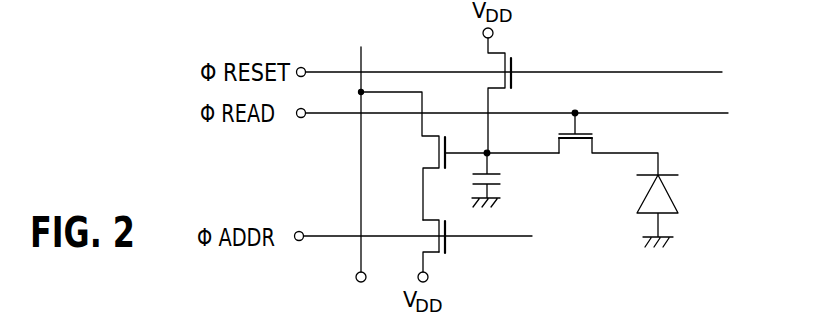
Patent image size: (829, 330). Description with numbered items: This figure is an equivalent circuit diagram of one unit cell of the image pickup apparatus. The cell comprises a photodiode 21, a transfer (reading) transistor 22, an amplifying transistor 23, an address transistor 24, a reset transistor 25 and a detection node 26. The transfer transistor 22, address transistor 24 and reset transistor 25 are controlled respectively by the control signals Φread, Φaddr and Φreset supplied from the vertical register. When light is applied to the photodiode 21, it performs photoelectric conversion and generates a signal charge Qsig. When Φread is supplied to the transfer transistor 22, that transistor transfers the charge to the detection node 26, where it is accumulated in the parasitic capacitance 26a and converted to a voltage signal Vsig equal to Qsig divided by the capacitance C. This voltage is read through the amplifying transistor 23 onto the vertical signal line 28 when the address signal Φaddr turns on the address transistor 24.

The photodiode 21 is at (672, 186).
The transfer transistor 22 is at (573, 141).
The amplifying transistor 23 is at (439, 151).
The address transistor 24 is at (446, 245).
The reset transistor 25 is at (513, 62).
The detection node 26 is at (490, 151).
The parasitic capacitance 26a is at (500, 185).
The vertical signal line 28 is at (361, 189).